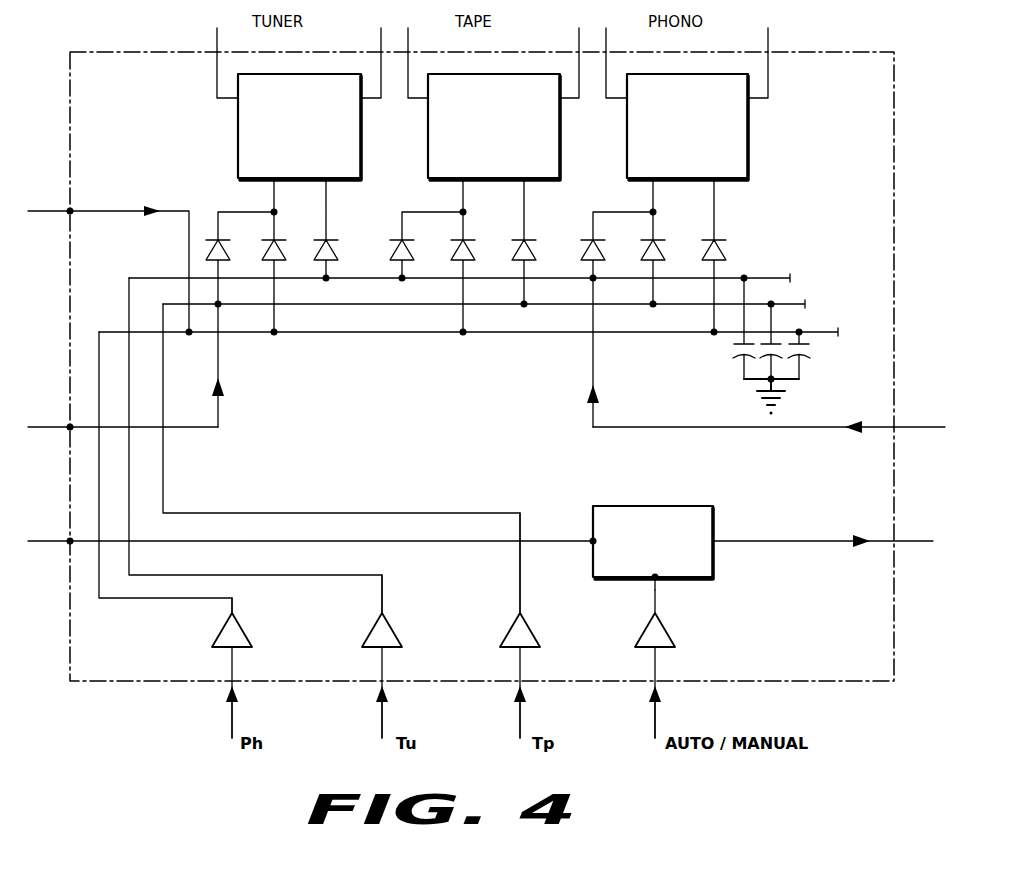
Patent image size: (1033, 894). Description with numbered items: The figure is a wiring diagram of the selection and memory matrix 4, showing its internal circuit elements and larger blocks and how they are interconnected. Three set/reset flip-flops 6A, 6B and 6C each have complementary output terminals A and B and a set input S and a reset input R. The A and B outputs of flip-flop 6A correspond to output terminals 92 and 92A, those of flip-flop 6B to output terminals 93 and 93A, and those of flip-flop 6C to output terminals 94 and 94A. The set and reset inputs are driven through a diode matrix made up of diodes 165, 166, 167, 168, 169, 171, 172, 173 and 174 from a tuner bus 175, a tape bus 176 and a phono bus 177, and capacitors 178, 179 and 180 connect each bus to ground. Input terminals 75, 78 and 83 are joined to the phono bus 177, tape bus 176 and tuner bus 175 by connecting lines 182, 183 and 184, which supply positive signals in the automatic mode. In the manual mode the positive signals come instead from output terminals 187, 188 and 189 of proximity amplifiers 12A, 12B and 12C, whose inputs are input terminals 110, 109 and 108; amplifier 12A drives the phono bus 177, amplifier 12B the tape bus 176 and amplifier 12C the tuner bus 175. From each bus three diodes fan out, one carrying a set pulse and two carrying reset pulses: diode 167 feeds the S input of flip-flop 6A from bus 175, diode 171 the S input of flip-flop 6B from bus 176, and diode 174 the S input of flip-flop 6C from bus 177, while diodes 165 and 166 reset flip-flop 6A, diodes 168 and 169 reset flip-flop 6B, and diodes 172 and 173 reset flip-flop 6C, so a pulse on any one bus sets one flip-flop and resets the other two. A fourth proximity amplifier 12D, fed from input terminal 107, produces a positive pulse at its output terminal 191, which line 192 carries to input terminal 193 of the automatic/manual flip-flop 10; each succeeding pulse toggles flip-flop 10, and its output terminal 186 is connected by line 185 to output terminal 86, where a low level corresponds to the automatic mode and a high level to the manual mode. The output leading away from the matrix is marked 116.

The selection and memory matrix 4 is at (482, 366).
The set/reset flip-flop 6A is at (299, 127).
The set/reset flip-flop 6B is at (494, 127).
The set/reset flip-flop 6C is at (687, 127).
The automatic/manual flip-flop 10 is at (653, 542).
The proximity amplifier 12A is at (246, 644).
The proximity amplifier 12B is at (396, 644).
The proximity amplifier 12C is at (536, 644).
The proximity amplifier 12D is at (670, 644).
The input terminal 75 is at (55, 211).
The input terminal 78 is at (55, 426).
The input terminal 83 is at (916, 426).
The output terminal 86 is at (55, 540).
The output terminal 92 is at (217, 46).
The output terminal 92A is at (380, 46).
The output terminal 93 is at (408, 46).
The output terminal 93A is at (579, 46).
The output terminal 94 is at (606, 46).
The output terminal 94A is at (768, 46).
The input terminal 107 is at (659, 727).
The input terminal 108 is at (519, 727).
The input terminal 109 is at (382, 727).
The input terminal 110 is at (232, 727).
The output line 116 is at (915, 544).
The diode 165 is at (228, 228).
The diode 166 is at (284, 228).
The diode 167 is at (336, 228).
The diode 168 is at (412, 228).
The diode 169 is at (473, 228).
The diode 171 is at (534, 228).
The diode 172 is at (603, 228).
The diode 173 is at (663, 228).
The diode 174 is at (724, 228).
The tuner bus 175 is at (739, 276).
The tape bus 176 is at (776, 304).
The phono bus 177 is at (800, 332).
The capacitor 178 is at (732, 348).
The capacitor 179 is at (760, 373).
The capacitor 180 is at (805, 348).
The connecting line 182 is at (108, 212).
The connecting line 183 is at (227, 369).
The connecting line 184 is at (590, 376).
The line 185 is at (430, 543).
The output terminal 186 is at (592, 540).
The output terminal 187 is at (234, 614).
The output terminal 188 is at (384, 614).
The output terminal 189 is at (524, 614).
The output terminal 191 is at (655, 614).
The line 192 is at (650, 595).
The input terminal 193 is at (660, 578).